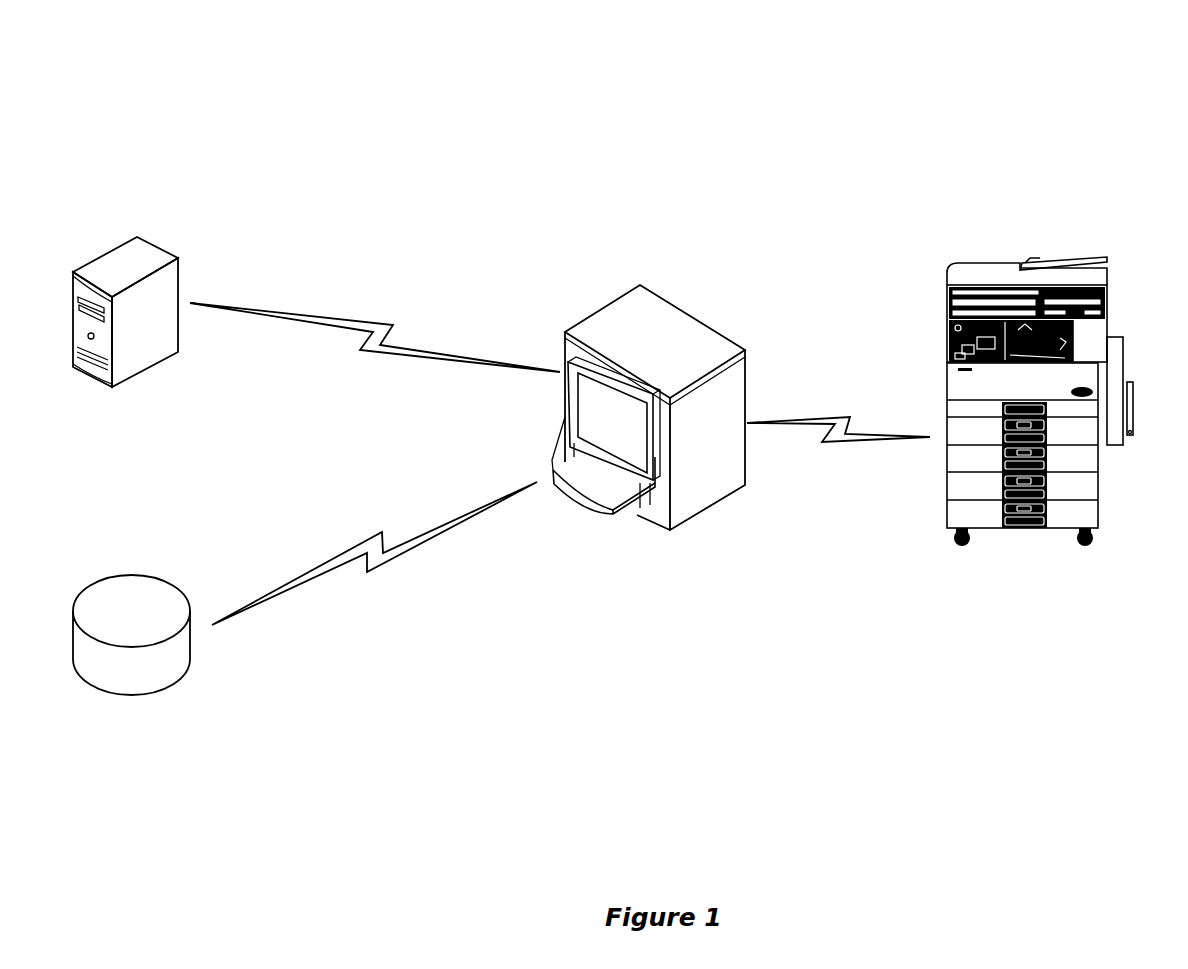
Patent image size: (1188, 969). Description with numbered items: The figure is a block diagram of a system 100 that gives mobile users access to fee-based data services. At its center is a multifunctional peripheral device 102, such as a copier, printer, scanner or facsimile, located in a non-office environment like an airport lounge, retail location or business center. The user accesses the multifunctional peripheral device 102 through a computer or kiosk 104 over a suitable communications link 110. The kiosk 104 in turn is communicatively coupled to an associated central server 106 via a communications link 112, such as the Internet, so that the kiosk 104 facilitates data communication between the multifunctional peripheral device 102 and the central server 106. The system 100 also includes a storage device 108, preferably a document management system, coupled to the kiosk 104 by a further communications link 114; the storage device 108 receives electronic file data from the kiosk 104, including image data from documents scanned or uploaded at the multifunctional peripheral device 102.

The system 100 is at (566, 60).
The multifunctional peripheral device 102 is at (1108, 300).
The kiosk 104 is at (637, 297).
The central server 106 is at (176, 258).
The storage device 108 is at (145, 573).
The communications link 110 is at (855, 418).
The communications link 112 is at (397, 327).
The network connection 114 is at (378, 532).